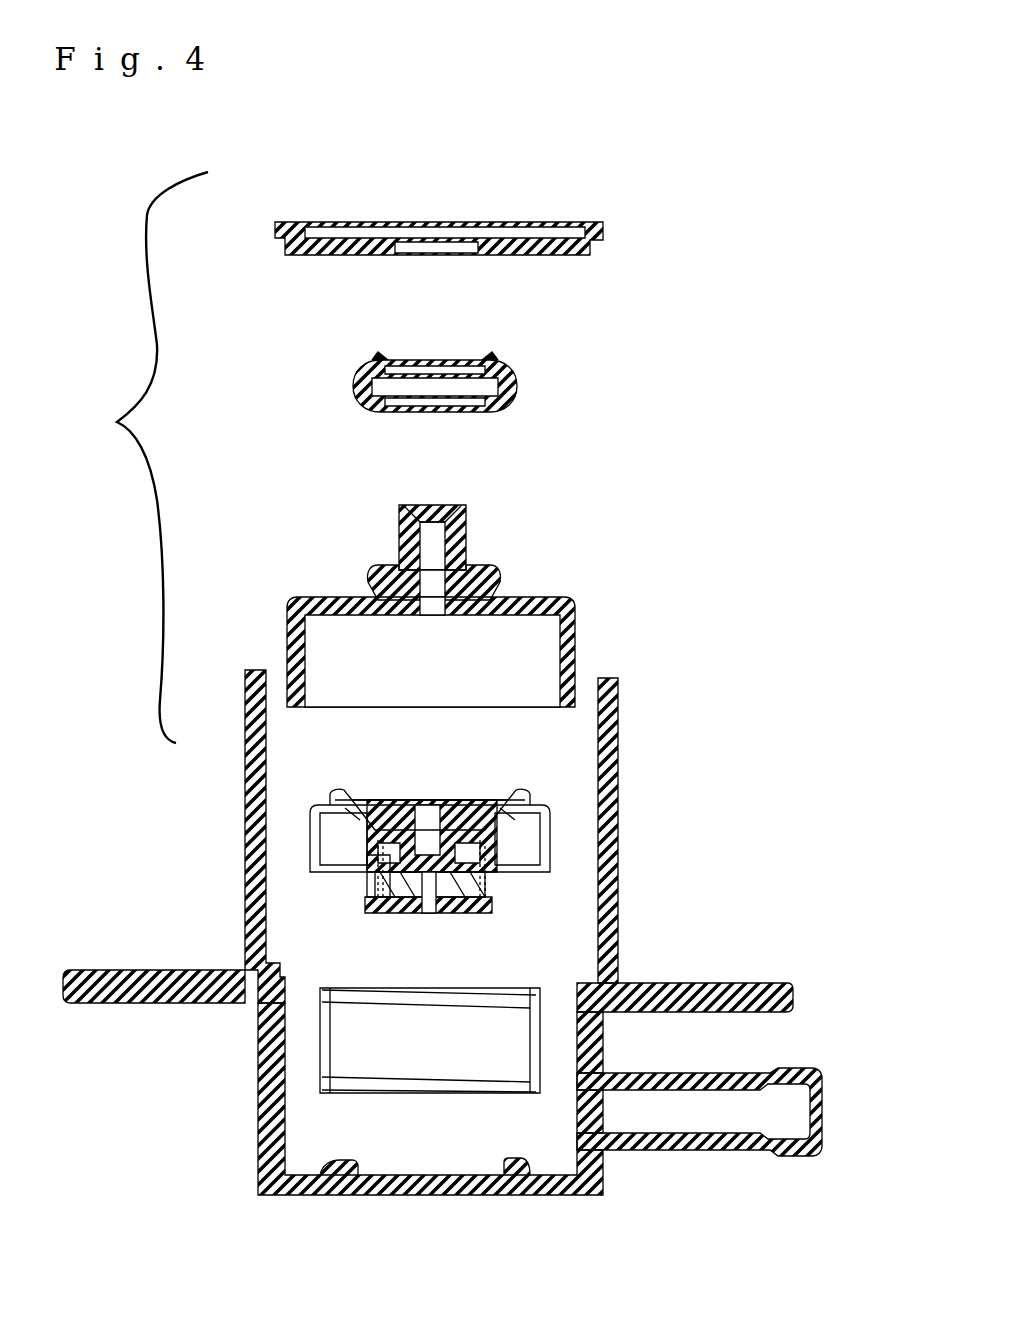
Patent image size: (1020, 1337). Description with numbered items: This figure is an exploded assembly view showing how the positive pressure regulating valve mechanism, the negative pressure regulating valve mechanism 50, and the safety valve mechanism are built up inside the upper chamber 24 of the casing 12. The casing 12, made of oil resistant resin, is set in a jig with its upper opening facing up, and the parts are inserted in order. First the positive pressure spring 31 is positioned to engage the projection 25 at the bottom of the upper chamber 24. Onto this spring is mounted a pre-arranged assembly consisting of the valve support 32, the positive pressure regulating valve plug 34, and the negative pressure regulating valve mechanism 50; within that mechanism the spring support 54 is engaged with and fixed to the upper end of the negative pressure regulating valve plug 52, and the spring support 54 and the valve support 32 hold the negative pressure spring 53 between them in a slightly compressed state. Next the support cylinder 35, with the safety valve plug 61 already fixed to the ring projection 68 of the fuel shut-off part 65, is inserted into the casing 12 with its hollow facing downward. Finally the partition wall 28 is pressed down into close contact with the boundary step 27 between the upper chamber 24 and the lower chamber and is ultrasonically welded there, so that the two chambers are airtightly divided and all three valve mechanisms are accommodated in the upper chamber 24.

The casing 12 is at (608, 880).
The upper chamber 24 is at (315, 1113).
The projection 25 is at (327, 1170).
The boundary step 27 is at (600, 970).
The partition wall 28 is at (603, 242).
The positive pressure spring 31 is at (320, 1030).
The valve support 32 is at (550, 835).
The positive pressure regulating valve plug 34 is at (490, 822).
The support cylinder 35 is at (575, 638).
The negative pressure regulating valve mechanism 50 is at (514, 905).
The negative pressure regulating valve plug 52 is at (445, 913).
The negative pressure spring 53 is at (380, 885).
The spring support 54 is at (470, 913).
The safety valve plug 61 is at (519, 392).
The fuel shut-off part 65 is at (466, 532).
The ring projection 68 is at (510, 580).